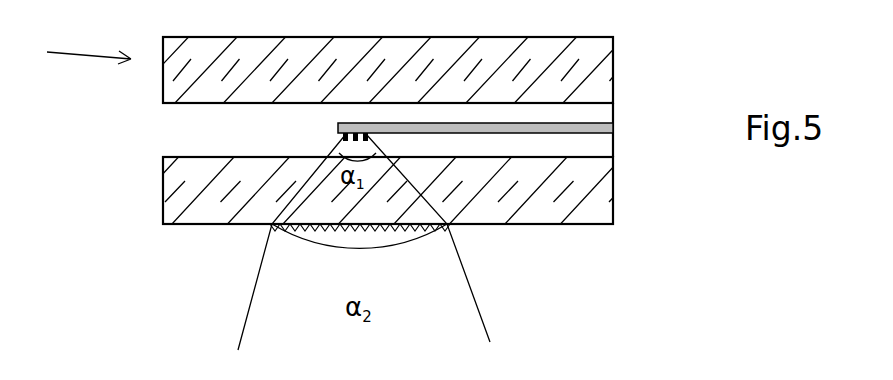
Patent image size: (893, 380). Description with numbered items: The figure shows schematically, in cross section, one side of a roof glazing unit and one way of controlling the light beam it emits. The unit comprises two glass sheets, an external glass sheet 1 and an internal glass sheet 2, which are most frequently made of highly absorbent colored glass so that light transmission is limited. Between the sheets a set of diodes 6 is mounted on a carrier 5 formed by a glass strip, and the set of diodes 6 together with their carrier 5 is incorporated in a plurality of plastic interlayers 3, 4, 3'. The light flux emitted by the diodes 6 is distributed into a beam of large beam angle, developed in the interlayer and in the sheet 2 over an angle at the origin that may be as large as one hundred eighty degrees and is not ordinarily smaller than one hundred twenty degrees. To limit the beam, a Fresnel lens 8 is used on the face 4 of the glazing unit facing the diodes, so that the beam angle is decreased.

The external glass sheet 1 is at (400, 70).
The internal glass sheet 2 is at (398, 190).
The plastic interlayer 3 is at (321, 130).
The plastic interlayer 4 is at (388, 130).
The plastic interlayer 3' is at (388, 130).
The carrier 5 is at (624, 124).
The set of diodes 6 is at (250, 130).
The Fresnel lens 8 is at (373, 228).